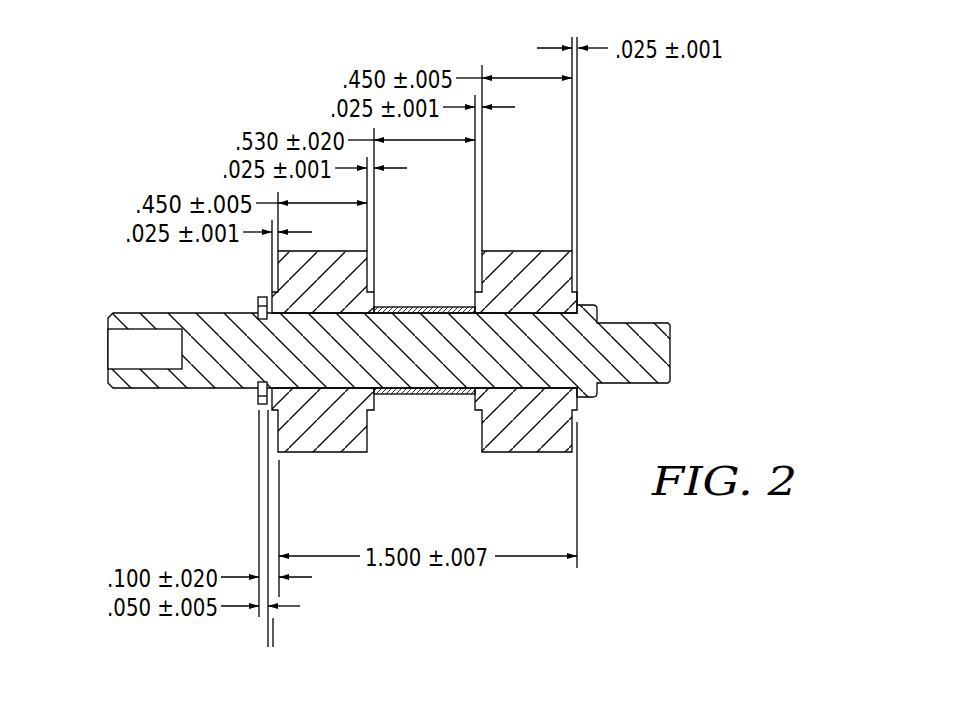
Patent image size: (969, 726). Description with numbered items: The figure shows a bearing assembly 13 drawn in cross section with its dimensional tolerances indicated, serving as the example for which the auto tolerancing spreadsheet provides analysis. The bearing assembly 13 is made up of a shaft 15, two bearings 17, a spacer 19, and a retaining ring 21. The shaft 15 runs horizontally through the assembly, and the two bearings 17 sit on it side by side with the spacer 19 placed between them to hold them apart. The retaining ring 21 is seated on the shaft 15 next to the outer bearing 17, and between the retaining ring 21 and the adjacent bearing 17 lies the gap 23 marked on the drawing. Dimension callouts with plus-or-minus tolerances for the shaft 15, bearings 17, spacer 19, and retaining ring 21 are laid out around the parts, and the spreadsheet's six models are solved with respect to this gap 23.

The bearing assembly 13 is at (516, 610).
The shaft 15 is at (670, 352).
The bearings 17 is at (533, 452).
The spacer 19 is at (413, 399).
The retaining ring 21 is at (259, 402).
The gap 23 is at (307, 633).